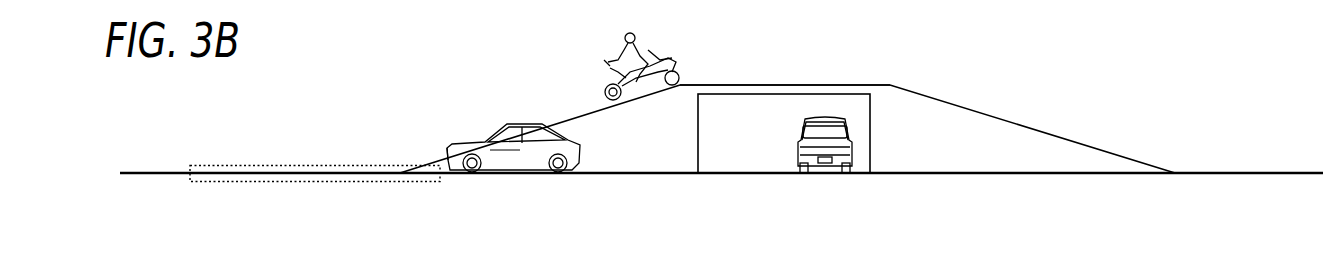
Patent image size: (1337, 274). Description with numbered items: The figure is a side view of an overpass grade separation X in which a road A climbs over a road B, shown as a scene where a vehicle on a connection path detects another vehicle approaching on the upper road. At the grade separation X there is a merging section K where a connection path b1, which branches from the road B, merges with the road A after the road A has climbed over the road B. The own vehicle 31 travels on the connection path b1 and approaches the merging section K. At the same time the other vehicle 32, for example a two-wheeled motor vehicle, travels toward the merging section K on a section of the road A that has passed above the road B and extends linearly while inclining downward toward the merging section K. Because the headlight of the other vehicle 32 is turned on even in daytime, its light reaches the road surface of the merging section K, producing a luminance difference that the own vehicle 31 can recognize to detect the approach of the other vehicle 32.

The merging section K is at (300, 164).
The road A is at (738, 85).
The grade separation X is at (888, 50).
The road B is at (750, 172).
The own vehicle 31 is at (524, 122).
The other vehicle 32 is at (680, 50).
The connection path b1 is at (612, 168).